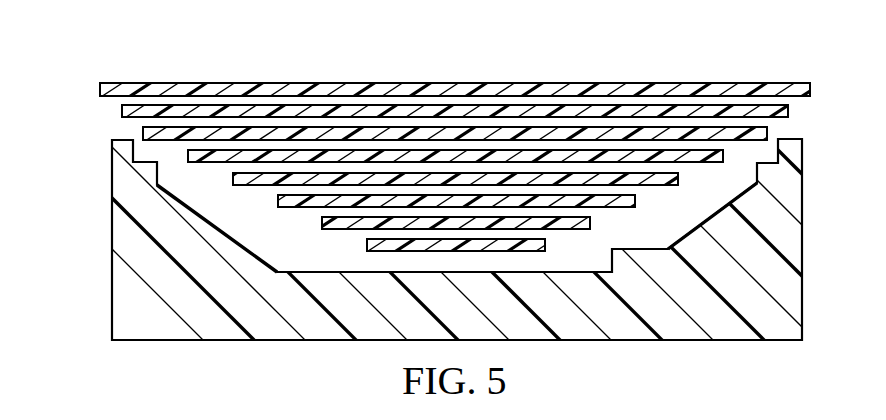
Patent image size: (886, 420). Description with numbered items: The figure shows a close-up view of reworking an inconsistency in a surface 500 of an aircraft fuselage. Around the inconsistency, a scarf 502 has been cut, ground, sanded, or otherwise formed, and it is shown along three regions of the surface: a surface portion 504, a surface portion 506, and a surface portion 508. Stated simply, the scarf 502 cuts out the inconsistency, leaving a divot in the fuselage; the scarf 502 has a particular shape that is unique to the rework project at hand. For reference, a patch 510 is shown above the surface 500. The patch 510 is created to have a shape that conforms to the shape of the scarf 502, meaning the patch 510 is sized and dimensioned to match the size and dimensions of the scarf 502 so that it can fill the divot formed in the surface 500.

The surface 500 is at (122, 140).
The scarf 502 is at (275, 256).
The surface portion 504 is at (220, 222).
The surface portion 506 is at (368, 272).
The surface portion 508 is at (710, 210).
The patch 510 is at (448, 83).